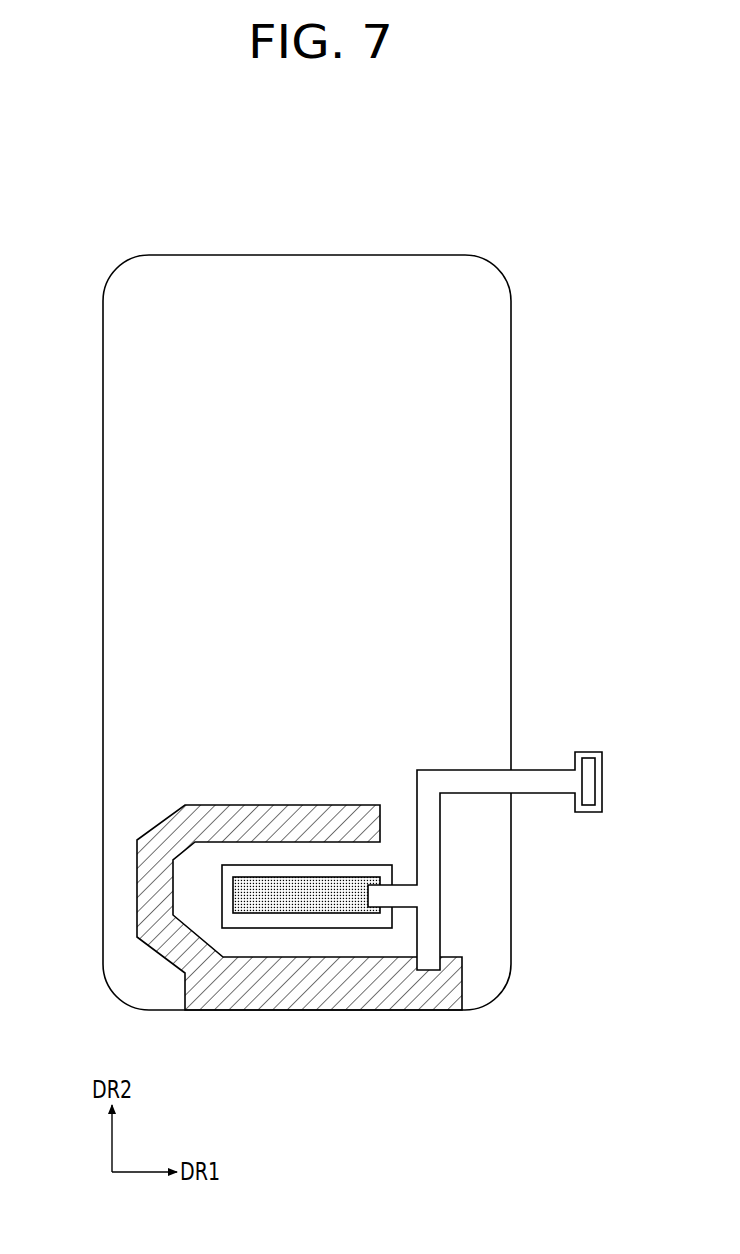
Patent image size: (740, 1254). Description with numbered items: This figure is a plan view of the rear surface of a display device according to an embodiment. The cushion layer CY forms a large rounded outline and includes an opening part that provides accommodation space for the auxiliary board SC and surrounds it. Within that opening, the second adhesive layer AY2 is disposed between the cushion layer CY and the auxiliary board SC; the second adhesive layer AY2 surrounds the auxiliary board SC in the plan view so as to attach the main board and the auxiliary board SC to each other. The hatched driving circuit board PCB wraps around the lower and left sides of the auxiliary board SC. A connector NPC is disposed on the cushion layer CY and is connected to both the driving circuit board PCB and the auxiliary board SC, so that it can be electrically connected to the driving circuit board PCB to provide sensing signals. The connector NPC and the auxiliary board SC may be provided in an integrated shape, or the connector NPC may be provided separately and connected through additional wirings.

The cushion layer CY is at (495, 642).
The connector NPC is at (462, 772).
The auxiliary board SC is at (265, 912).
The second adhesive layer AY2 is at (335, 912).
The driving circuit board PCB is at (425, 1003).